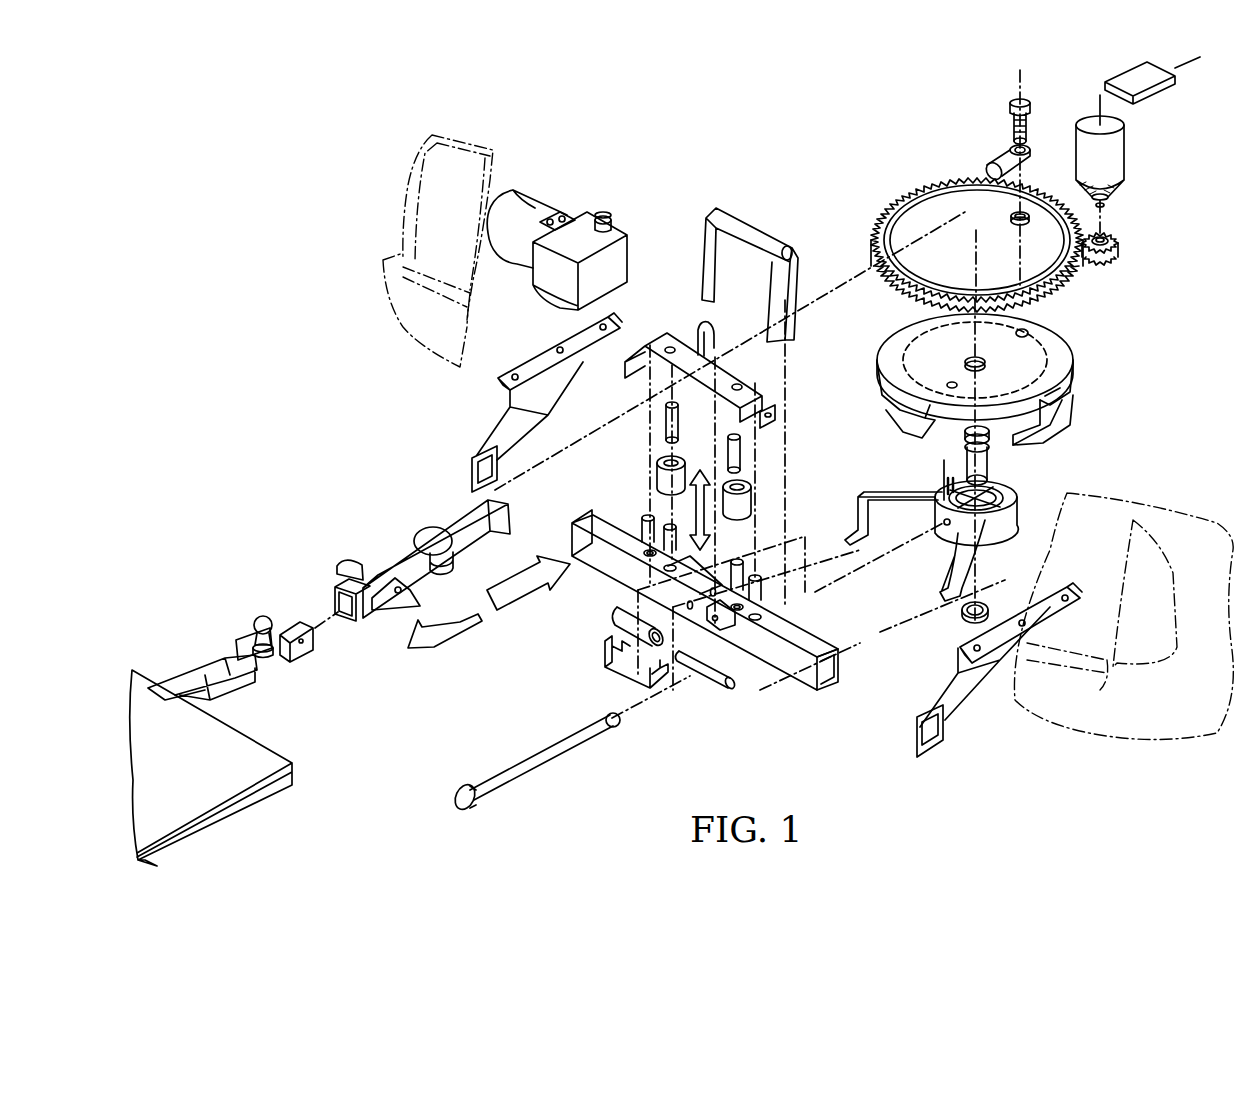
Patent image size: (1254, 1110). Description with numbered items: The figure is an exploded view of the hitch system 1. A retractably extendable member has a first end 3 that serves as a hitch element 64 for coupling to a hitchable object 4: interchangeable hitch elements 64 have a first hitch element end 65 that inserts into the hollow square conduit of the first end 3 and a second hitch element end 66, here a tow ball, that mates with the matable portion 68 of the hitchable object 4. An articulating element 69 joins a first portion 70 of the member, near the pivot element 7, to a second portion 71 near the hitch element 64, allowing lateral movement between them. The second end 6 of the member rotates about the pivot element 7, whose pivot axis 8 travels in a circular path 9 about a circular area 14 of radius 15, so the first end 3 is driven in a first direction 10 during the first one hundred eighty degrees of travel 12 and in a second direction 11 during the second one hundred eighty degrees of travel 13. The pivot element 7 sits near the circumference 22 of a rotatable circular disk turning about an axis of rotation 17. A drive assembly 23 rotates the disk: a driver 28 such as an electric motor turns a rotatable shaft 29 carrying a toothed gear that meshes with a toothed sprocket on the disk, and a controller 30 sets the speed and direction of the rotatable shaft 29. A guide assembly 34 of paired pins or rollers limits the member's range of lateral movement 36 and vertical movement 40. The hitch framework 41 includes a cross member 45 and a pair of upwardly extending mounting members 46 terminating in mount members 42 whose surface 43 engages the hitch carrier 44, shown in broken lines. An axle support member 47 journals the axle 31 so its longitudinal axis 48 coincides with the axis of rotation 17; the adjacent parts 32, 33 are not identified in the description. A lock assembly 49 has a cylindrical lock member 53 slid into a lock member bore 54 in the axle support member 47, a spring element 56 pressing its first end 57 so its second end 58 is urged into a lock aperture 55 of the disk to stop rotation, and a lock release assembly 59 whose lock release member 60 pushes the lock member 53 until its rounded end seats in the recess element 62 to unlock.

The hitch system 1 is at (364, 159).
The first end 3 is at (346, 628).
The hitchable object 4 is at (286, 622).
The second end 6 is at (1025, 153).
The pivot element 7 is at (1025, 102).
The pivot axis 8 is at (1019, 164).
The circular path 9 is at (1030, 335).
The first direction 10 is at (445, 632).
The second direction 11 is at (528, 583).
The first 180 degrees of travel 12 is at (893, 413).
The second 180 degrees of travel 13 is at (1036, 430).
The circular area 14 is at (1033, 356).
The radius 15 is at (1016, 369).
The axis of rotation 17 is at (996, 255).
The circumference 22 is at (1041, 400).
The drive assembly 23 is at (1132, 212).
The driver 28 is at (1112, 152).
The rotatable shaft 29 is at (1103, 200).
The controller 30 is at (1150, 92).
The axle 31 is at (986, 461).
The shaft cap 32 is at (989, 438).
The shaft 33 is at (987, 480).
The guide assembly 34 is at (762, 505).
The range of lateral movement 36 is at (680, 440).
The vertical movement 40 is at (664, 504).
The hitch framework 41 is at (996, 716).
The mount members 42 is at (614, 324).
The surface 43 is at (522, 366).
The hitch carrier 44 is at (380, 252).
The cross member 45 is at (795, 682).
The mounting members 46 is at (541, 408).
The axle support member 47 is at (997, 536).
The longitudinal axis 48 is at (968, 622).
The lock assembly 49 is at (870, 498).
The lock member 53 is at (936, 460).
The lock member bore 54 is at (918, 505).
The lock aperture 55 is at (952, 380).
The spring element 56 is at (1002, 522).
The first end of lock member 57 is at (1001, 502).
The second end of lock member 58 is at (936, 438).
The lock release assembly 59 is at (588, 760).
The lock release member 60 is at (506, 786).
The recess element 62 is at (944, 478).
The hitch element 64 is at (262, 616).
The first hitch element end 65 is at (316, 646).
The second hitch element end 66 is at (262, 658).
The matable portion 68 is at (249, 646).
The articulating element 69 is at (426, 528).
The first portion 70 is at (455, 525).
The second portion 71 is at (392, 554).